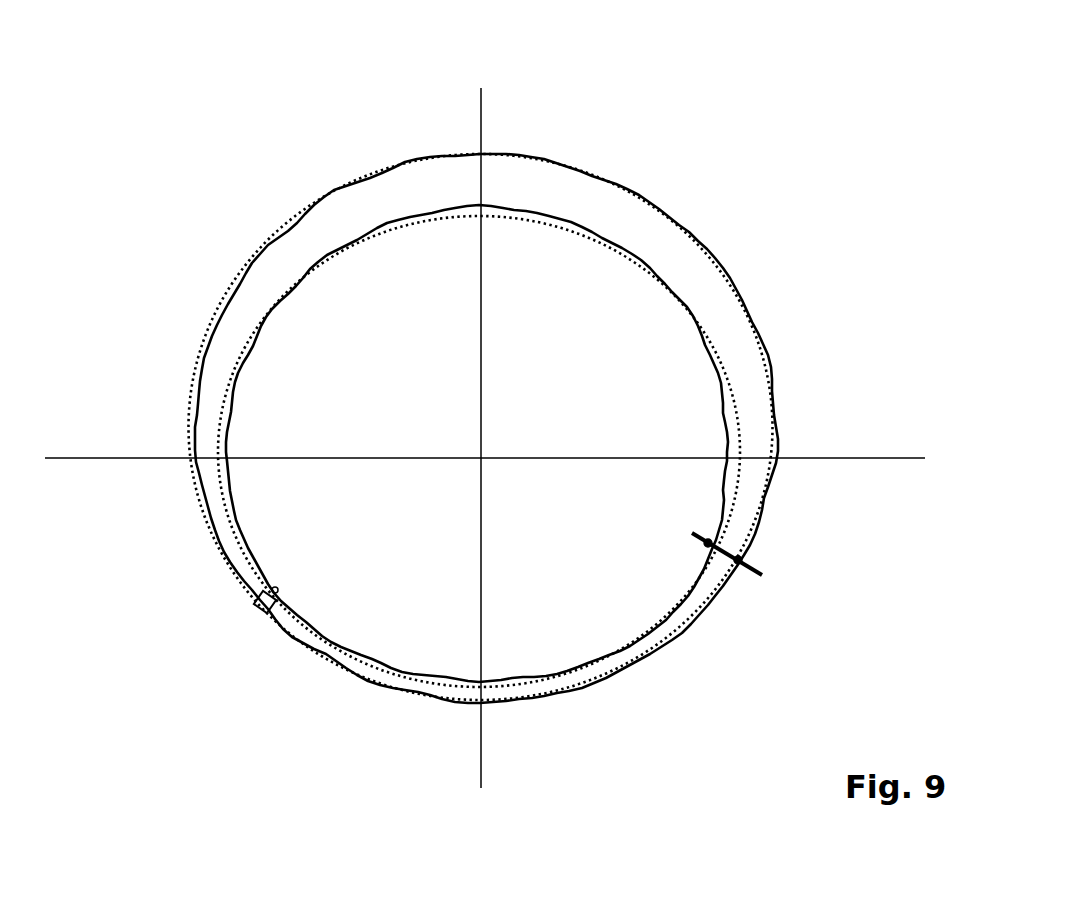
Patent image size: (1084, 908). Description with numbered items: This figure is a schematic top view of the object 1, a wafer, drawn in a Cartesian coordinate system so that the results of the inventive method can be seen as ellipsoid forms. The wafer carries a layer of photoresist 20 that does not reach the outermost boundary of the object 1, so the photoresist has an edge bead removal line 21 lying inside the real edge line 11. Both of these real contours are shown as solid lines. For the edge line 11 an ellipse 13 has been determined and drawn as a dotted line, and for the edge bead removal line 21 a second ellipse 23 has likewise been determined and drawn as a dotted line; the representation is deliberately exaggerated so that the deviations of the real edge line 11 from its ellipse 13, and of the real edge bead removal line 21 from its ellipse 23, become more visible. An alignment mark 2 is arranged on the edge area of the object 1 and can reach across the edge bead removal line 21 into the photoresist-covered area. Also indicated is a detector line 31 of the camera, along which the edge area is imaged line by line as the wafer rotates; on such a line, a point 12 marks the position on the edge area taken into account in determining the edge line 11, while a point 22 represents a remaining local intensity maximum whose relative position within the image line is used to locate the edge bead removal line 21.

The object 1 is at (253, 216).
The alignment mark 2 is at (248, 613).
The edge line 11 is at (737, 574).
The point 12 is at (740, 567).
The ellipse 13 is at (773, 488).
The layer of photoresist 20 is at (582, 330).
The edge bead removal line 21 is at (723, 405).
The point 22 is at (708, 545).
The ellipse 23 is at (742, 448).
The detector line 31 is at (700, 533).